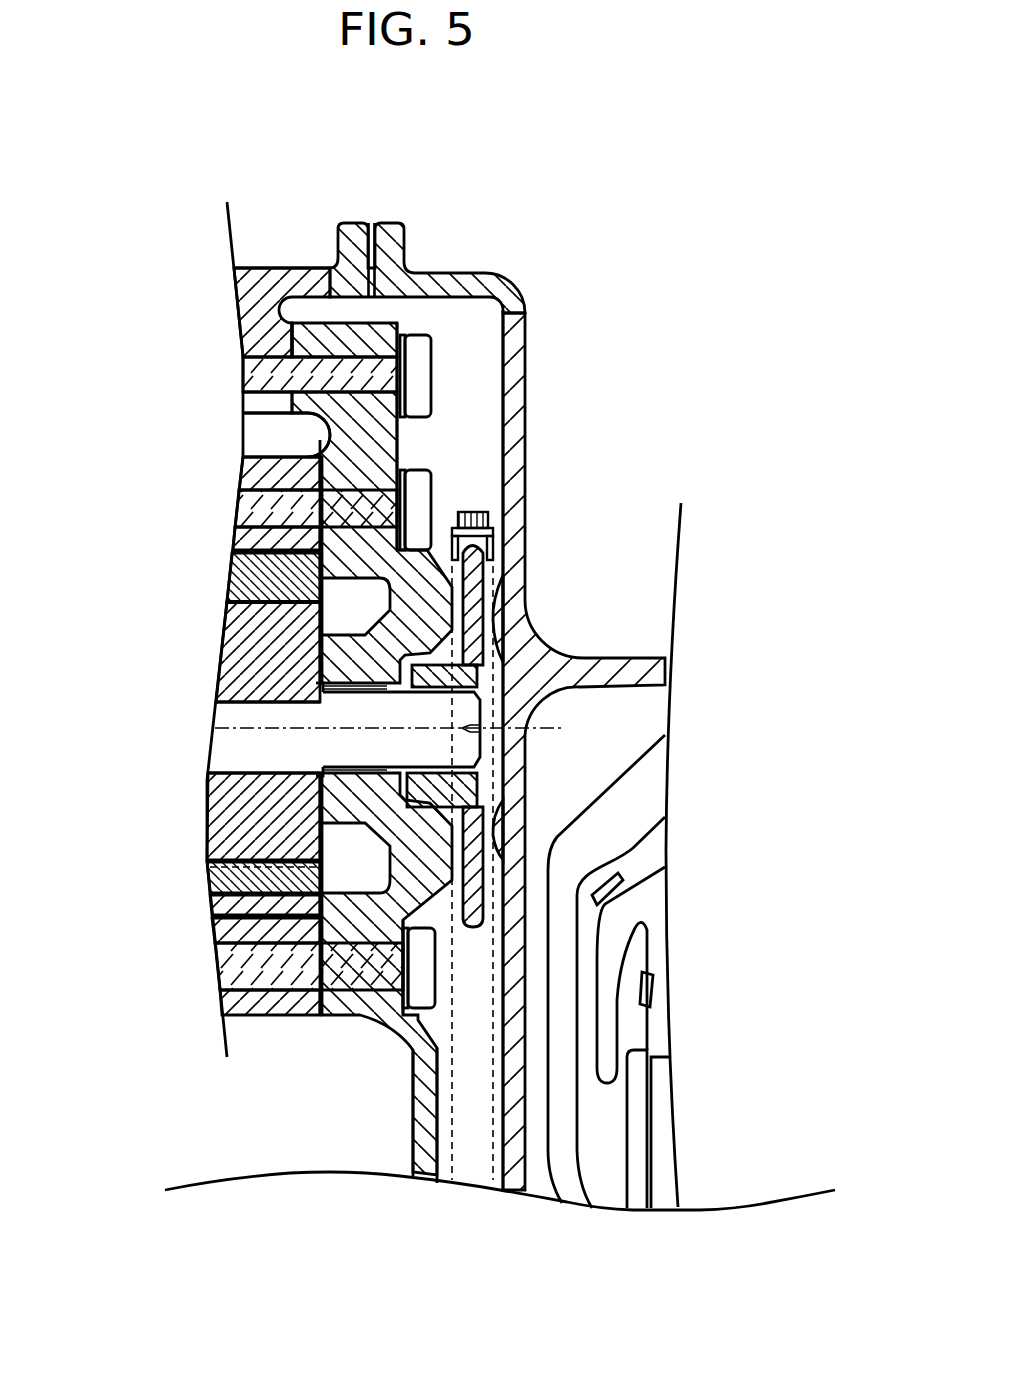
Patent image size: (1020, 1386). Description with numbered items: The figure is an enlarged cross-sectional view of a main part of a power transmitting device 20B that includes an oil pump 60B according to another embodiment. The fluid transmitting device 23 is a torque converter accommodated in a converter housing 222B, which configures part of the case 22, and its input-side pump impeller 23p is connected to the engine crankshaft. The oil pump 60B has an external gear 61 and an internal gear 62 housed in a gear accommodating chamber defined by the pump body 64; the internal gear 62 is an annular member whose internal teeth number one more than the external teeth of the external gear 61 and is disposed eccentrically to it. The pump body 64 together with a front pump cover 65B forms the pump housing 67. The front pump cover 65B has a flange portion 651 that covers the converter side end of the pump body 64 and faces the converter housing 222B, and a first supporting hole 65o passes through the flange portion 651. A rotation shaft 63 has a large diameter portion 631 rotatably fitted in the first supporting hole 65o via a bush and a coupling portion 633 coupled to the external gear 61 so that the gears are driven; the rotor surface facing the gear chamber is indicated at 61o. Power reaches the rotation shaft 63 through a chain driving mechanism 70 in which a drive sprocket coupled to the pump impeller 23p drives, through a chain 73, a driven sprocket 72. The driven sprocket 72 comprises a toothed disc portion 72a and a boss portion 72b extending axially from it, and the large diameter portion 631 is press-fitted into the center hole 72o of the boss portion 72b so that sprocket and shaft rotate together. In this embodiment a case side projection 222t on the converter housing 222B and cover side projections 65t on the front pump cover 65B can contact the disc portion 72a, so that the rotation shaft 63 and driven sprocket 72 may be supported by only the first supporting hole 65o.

The power transmitting device 20B is at (121, 194).
The case 22 is at (351, 237).
The converter housing 222B is at (440, 292).
The case side projection 222t is at (498, 592).
The flange portion 651 is at (323, 430).
The front pump cover 65B is at (414, 443).
The cover side projection 65t is at (438, 600).
The first supporting hole 65o is at (400, 900).
The pump housing 67 is at (412, 325).
The oil pump 60B is at (215, 548).
The pump body 64 is at (267, 478).
The internal gear 62 is at (277, 585).
The external gear 61 is at (273, 645).
The rotor outer portion 61o is at (226, 770).
The rotation shaft 63 is at (253, 725).
The large diameter portion 631 is at (338, 752).
The coupling portion 633 is at (240, 750).
The chain driving mechanism 70 is at (484, 502).
The driven sprocket 72 is at (486, 566).
The disc portion 72a is at (462, 540).
The center hole 72o is at (500, 662).
The boss portion 72b is at (482, 790).
The fluid transmitting device 23 is at (626, 768).
The pump impeller 23p is at (563, 993).
The chain 73 is at (450, 1152).